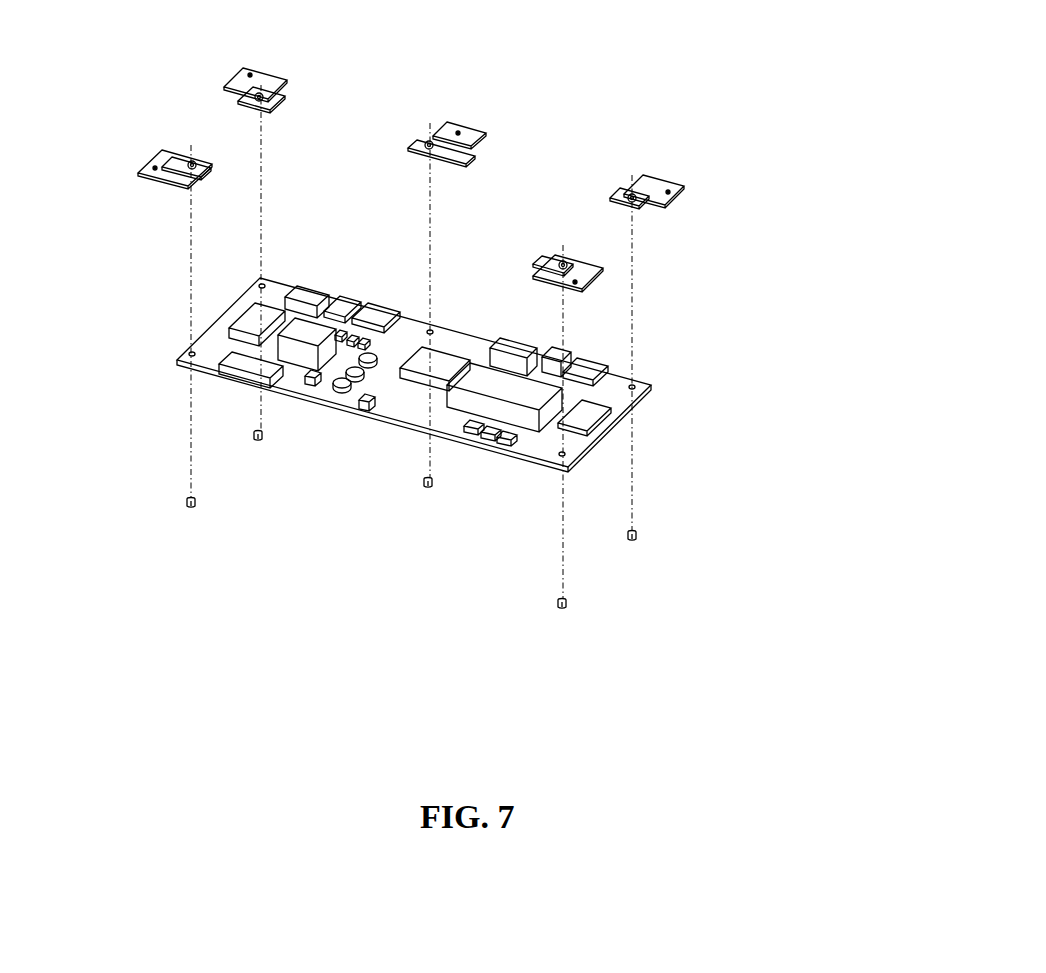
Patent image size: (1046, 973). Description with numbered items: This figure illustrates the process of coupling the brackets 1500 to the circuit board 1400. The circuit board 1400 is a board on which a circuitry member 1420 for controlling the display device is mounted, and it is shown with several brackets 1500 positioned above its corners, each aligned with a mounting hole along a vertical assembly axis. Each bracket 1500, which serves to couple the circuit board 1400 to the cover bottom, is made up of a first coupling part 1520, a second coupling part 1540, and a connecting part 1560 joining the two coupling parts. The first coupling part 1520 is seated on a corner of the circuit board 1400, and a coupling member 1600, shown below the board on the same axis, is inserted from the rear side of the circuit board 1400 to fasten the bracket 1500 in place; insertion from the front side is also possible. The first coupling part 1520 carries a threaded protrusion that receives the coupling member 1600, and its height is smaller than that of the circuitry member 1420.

The circuit board 1400 is at (643, 443).
The circuitry member 1420 is at (252, 322).
The bracket 1500 is at (703, 257).
The first coupling part 1520 is at (623, 192).
The second coupling part 1540 is at (660, 190).
The connecting part 1560 is at (630, 192).
The coupling member 1600 is at (567, 602).